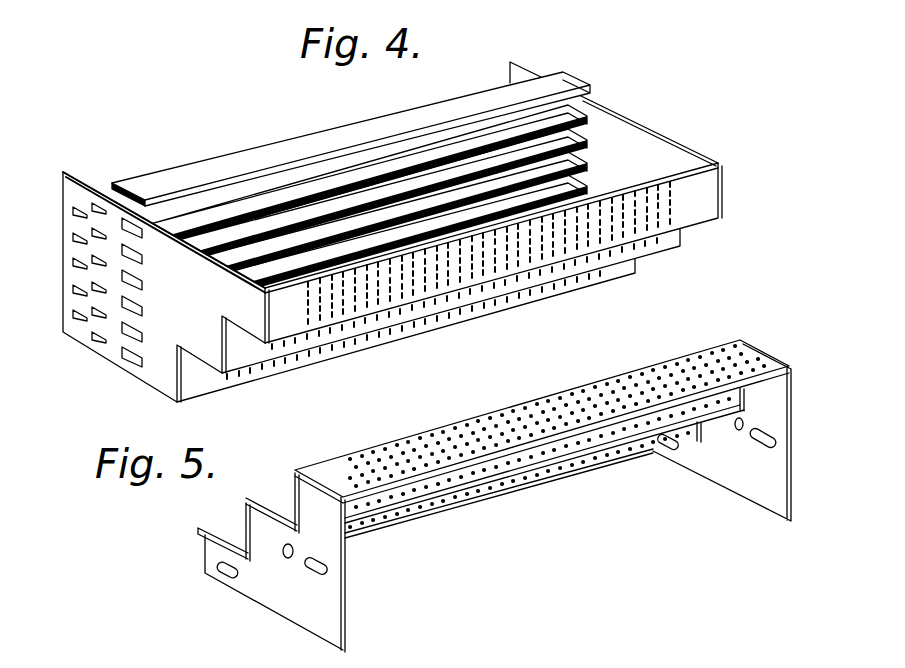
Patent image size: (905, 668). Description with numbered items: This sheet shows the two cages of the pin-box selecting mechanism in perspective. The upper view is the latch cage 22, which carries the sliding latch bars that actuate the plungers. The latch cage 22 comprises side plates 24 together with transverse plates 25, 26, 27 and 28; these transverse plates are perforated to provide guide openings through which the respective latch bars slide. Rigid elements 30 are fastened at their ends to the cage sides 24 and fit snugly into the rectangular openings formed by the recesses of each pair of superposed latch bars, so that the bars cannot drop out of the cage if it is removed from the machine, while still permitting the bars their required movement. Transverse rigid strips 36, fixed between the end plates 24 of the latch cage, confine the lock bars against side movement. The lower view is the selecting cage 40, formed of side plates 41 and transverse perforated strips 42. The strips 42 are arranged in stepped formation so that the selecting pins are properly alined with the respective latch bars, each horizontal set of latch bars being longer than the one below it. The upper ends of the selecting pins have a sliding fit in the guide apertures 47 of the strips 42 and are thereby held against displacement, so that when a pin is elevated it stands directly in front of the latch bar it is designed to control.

In FIG. 4, the cage 22 is at (687, 157).
In FIG. 4, the side plates 24 is at (646, 146).
In FIG. 4, the transverse plate 25 is at (713, 205).
In FIG. 4, the transverse plate 26 is at (668, 244).
In FIG. 4, the transverse plate 27 is at (606, 277).
In FIG. 4, the transverse plate 28 is at (135, 183).
In FIG. 4, the rigid element 30 is at (583, 153).
In FIG. 4, the transverse rigid strips 36 is at (93, 337).
In FIG. 5, the selecting cage 40 is at (458, 485).
In FIG. 5, the side plates 41 is at (749, 444).
In FIG. 5, the transverse perforated strips 42 is at (178, 549).
In FIG. 5, the guide apertures 47 is at (292, 495).